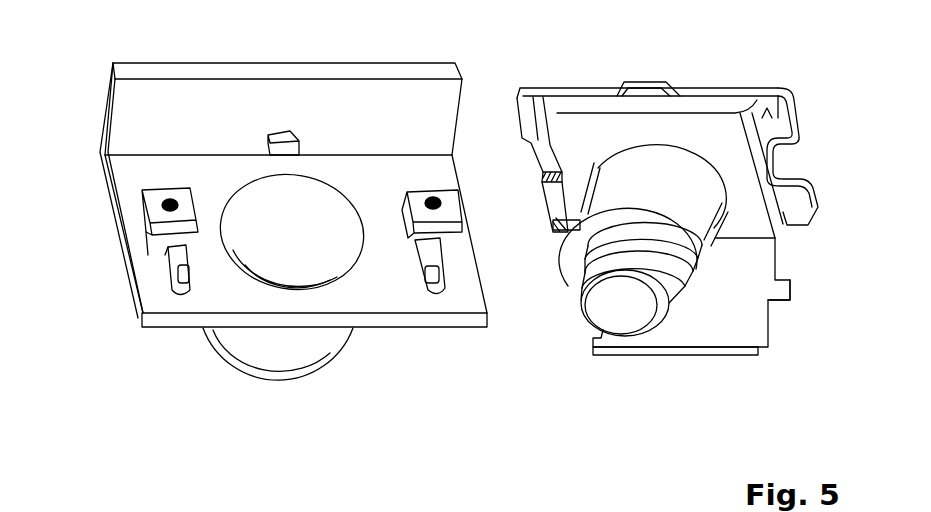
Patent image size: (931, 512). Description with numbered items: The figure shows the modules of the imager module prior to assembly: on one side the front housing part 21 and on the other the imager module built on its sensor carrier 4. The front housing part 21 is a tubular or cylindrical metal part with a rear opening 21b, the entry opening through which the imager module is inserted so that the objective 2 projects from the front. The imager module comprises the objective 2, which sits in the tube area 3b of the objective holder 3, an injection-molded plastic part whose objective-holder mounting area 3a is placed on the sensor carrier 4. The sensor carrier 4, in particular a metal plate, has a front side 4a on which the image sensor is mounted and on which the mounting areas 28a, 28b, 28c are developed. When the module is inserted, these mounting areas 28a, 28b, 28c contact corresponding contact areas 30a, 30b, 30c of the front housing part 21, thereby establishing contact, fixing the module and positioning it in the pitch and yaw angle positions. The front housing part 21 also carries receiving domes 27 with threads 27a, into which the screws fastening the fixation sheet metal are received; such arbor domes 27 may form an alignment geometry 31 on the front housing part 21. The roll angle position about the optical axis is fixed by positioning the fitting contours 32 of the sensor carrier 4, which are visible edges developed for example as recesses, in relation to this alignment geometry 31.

The objective 2 is at (685, 300).
The objective holder 3 is at (590, 108).
The objective-holder mounting area 3a is at (715, 105).
The tube area 3b is at (283, 367).
The sensor carrier 4 is at (750, 90).
The front side 4a is at (778, 115).
The front housing part 21 is at (160, 300).
The rear opening 21b is at (256, 212).
The receiving domes 27 is at (160, 205).
The threads 27a is at (160, 212).
The mounting area 28a is at (803, 226).
The mounting area 28b is at (644, 100).
The mounting area 28c is at (563, 213).
The contact area 30a is at (194, 296).
The contact area 30b is at (283, 130).
The contact area 30c is at (438, 292).
The alignment geometry 31 is at (170, 246).
The fitting contours 32 is at (545, 120).